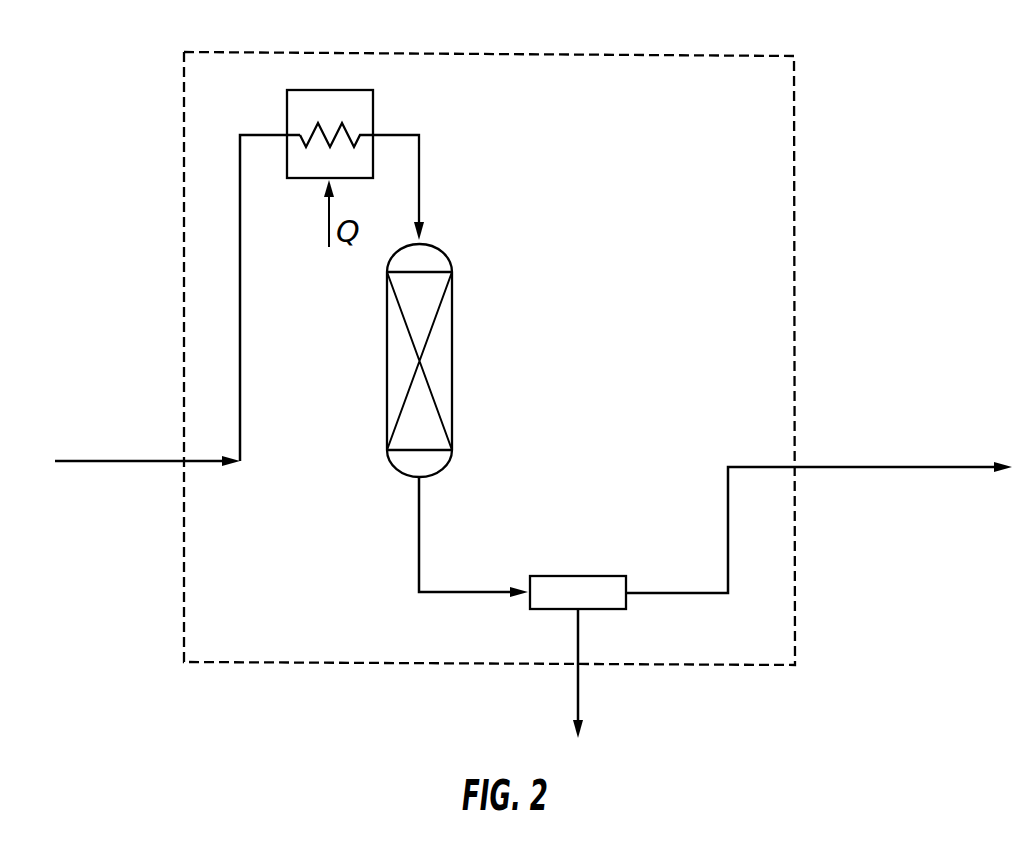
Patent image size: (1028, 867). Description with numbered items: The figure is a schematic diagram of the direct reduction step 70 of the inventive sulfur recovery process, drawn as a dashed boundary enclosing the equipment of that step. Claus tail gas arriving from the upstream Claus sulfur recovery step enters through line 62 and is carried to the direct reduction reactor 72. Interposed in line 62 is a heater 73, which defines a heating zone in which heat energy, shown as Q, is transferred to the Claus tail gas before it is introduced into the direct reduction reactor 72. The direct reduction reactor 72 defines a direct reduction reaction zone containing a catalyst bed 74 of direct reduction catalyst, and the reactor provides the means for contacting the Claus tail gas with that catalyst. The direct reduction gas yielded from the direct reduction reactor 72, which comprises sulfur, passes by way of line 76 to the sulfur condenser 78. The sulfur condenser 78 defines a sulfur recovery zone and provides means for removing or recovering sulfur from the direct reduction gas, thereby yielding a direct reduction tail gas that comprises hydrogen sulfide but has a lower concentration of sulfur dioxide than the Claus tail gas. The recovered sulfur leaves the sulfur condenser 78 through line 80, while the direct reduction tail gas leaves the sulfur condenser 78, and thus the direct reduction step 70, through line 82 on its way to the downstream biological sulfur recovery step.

The line 62 is at (127, 461).
The direct reduction step 70 is at (370, 52).
The direct reduction reactor 72 is at (455, 400).
The heater 73 is at (373, 108).
The catalyst bed 74 is at (412, 318).
The line 76 is at (487, 595).
The sulfur condenser 78 is at (585, 576).
The line 80 is at (580, 620).
The line 82 is at (860, 467).